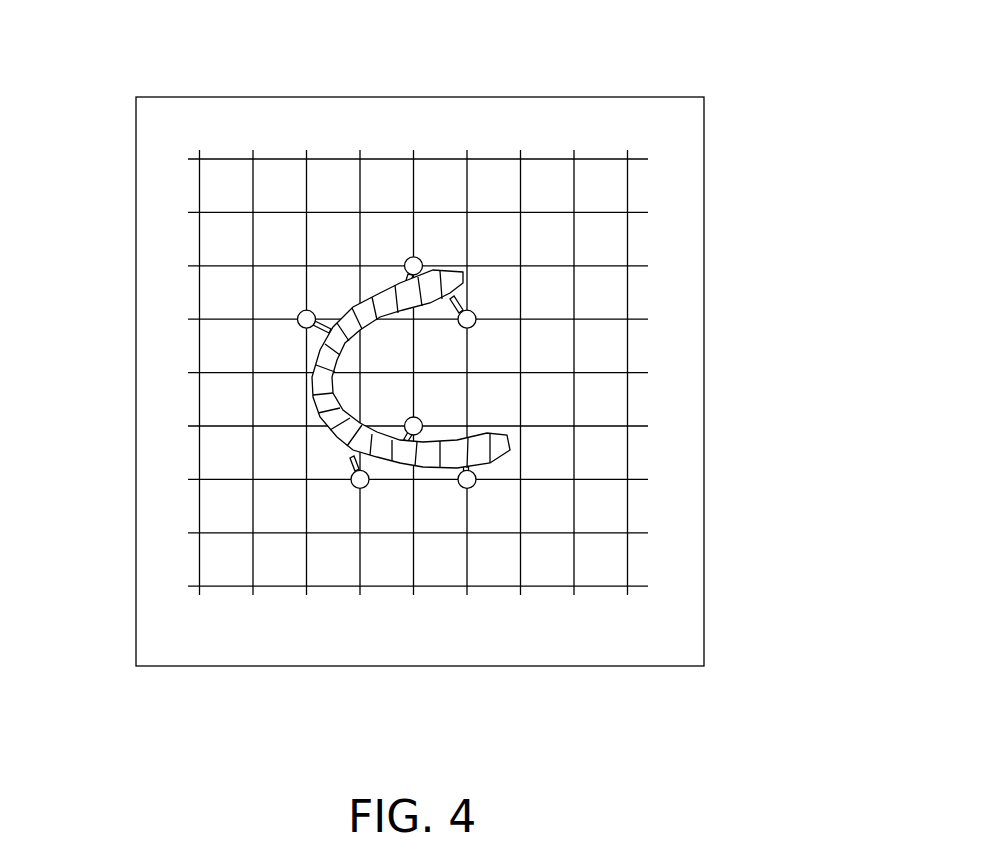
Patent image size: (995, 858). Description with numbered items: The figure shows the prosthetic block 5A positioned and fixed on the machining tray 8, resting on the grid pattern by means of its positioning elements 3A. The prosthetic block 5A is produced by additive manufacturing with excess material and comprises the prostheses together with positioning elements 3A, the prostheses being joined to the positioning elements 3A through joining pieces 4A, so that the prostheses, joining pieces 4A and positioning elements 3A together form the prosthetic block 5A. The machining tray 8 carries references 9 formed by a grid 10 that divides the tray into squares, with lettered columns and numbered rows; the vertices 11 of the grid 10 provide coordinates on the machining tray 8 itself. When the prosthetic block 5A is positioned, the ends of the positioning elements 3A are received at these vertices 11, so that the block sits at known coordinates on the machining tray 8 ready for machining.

The machining tray 8 is at (733, 148).
The references 9 is at (431, 301).
The grid 10 is at (627, 397).
The vertices 11 is at (252, 320).
The positioning elements 3A is at (306, 321).
The joining pieces 4A is at (462, 307).
The prosthetic block 5A is at (343, 296).